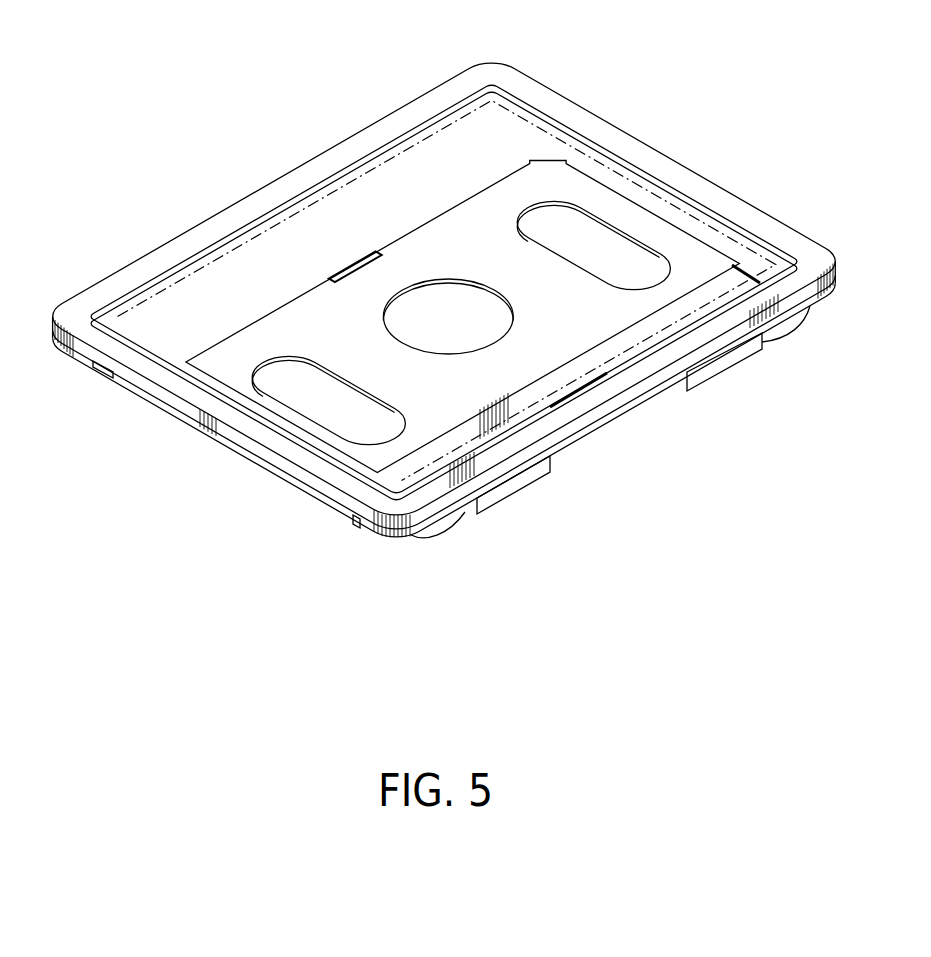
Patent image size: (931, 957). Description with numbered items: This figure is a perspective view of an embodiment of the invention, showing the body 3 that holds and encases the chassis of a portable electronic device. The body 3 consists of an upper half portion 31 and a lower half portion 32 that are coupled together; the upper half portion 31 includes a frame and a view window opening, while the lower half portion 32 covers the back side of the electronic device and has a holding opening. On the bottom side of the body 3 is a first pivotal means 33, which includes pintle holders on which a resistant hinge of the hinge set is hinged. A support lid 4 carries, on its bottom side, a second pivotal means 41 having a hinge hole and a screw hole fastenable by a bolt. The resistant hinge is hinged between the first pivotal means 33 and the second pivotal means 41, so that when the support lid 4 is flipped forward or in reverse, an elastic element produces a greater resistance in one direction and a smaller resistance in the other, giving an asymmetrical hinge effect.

The body 3 is at (628, 113).
The upper half portion 31 is at (80, 307).
The lower half portion 32 is at (130, 388).
The first pivotal means 33 is at (613, 427).
The support lid 4 is at (627, 216).
The second pivotal means 41 is at (520, 488).